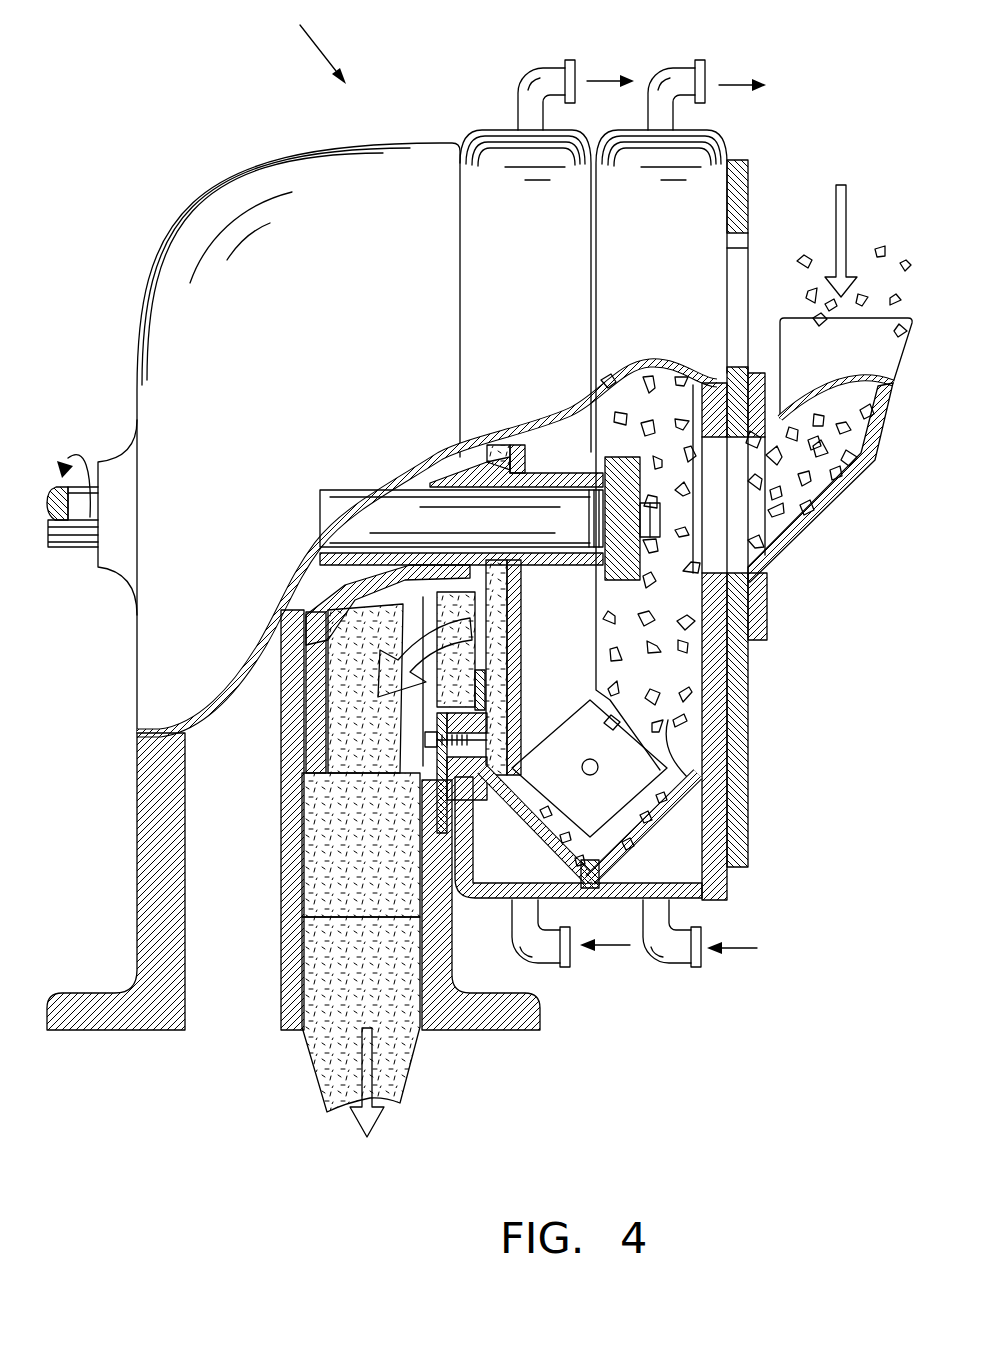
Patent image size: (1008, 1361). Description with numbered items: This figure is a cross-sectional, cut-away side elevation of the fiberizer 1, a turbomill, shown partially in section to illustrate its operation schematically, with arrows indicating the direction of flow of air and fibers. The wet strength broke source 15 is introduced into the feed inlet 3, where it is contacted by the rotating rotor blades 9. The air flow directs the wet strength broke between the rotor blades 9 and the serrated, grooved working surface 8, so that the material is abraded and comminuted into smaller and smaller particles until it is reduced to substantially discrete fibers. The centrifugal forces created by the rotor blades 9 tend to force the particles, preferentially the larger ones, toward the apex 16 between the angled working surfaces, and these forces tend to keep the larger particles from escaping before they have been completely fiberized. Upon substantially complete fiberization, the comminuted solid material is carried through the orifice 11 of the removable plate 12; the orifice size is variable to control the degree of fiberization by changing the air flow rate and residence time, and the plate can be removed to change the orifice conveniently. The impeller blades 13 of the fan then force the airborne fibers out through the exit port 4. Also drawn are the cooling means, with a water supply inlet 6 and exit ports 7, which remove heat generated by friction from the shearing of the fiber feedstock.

The fiberizer 1 is at (382, 516).
The feed inlet 3 is at (824, 362).
The exit port 4 is at (413, 1062).
The water supply inlet 6 is at (542, 957).
The exit ports 7 is at (519, 104).
The working surface 8 is at (506, 810).
The rotor blades 9 is at (636, 784).
The orifice 11 is at (515, 603).
The removable plate 12 is at (512, 657).
The impeller blades 13 is at (333, 772).
The wet strength broke source 15 is at (920, 275).
The apex 16 is at (574, 870).